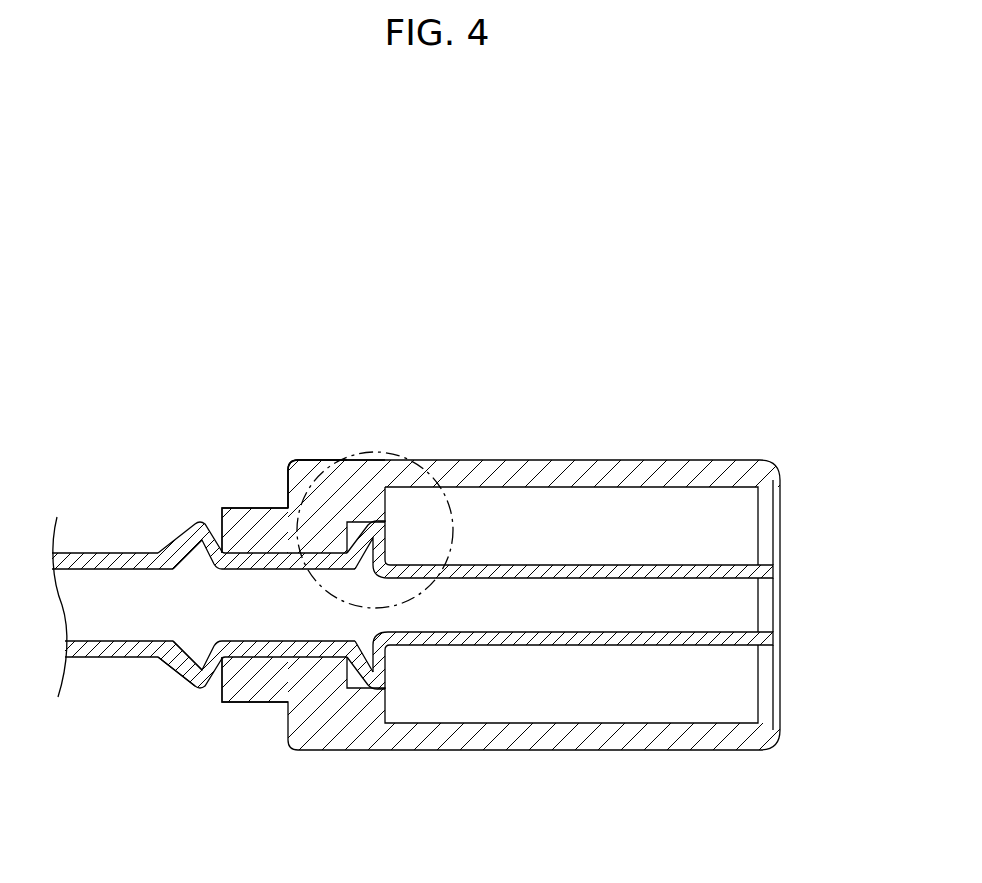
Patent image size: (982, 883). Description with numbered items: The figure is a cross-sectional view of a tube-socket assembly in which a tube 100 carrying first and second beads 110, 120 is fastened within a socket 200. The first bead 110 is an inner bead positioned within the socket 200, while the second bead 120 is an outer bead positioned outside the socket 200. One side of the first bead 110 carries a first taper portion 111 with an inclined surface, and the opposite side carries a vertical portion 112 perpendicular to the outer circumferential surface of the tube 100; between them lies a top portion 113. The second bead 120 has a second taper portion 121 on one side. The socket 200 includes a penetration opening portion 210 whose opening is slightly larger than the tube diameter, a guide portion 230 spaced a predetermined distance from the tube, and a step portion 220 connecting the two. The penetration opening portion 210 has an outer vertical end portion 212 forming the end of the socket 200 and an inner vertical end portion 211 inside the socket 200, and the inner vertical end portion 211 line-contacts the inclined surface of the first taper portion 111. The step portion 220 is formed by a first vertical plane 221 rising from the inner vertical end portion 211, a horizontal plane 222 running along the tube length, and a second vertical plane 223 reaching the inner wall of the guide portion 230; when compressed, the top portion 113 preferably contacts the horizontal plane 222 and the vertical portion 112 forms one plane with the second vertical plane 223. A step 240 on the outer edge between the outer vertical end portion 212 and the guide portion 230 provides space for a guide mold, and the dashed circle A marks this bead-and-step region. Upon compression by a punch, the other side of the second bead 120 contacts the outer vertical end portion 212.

The tube 100 is at (777, 568).
The first bead 110 is at (386, 688).
The first taper portion 111 is at (346, 688).
The vertical portion 112 is at (389, 664).
The top portion 113 is at (356, 692).
The second bead 120 is at (202, 688).
The second taper portion 121 is at (176, 683).
The socket 200 is at (492, 581).
The penetration opening portion 210 is at (253, 525).
The inner vertical end portion 211 is at (247, 700).
The outer vertical end portion 212 is at (210, 533).
The step portion 220 is at (366, 446).
The first vertical plane 221 is at (330, 520).
The horizontal plane 222 is at (345, 527).
The second vertical plane 223 is at (415, 459).
The guide portion 230 is at (637, 472).
The step 240 is at (290, 492).
The enlarged detail region A is at (458, 531).